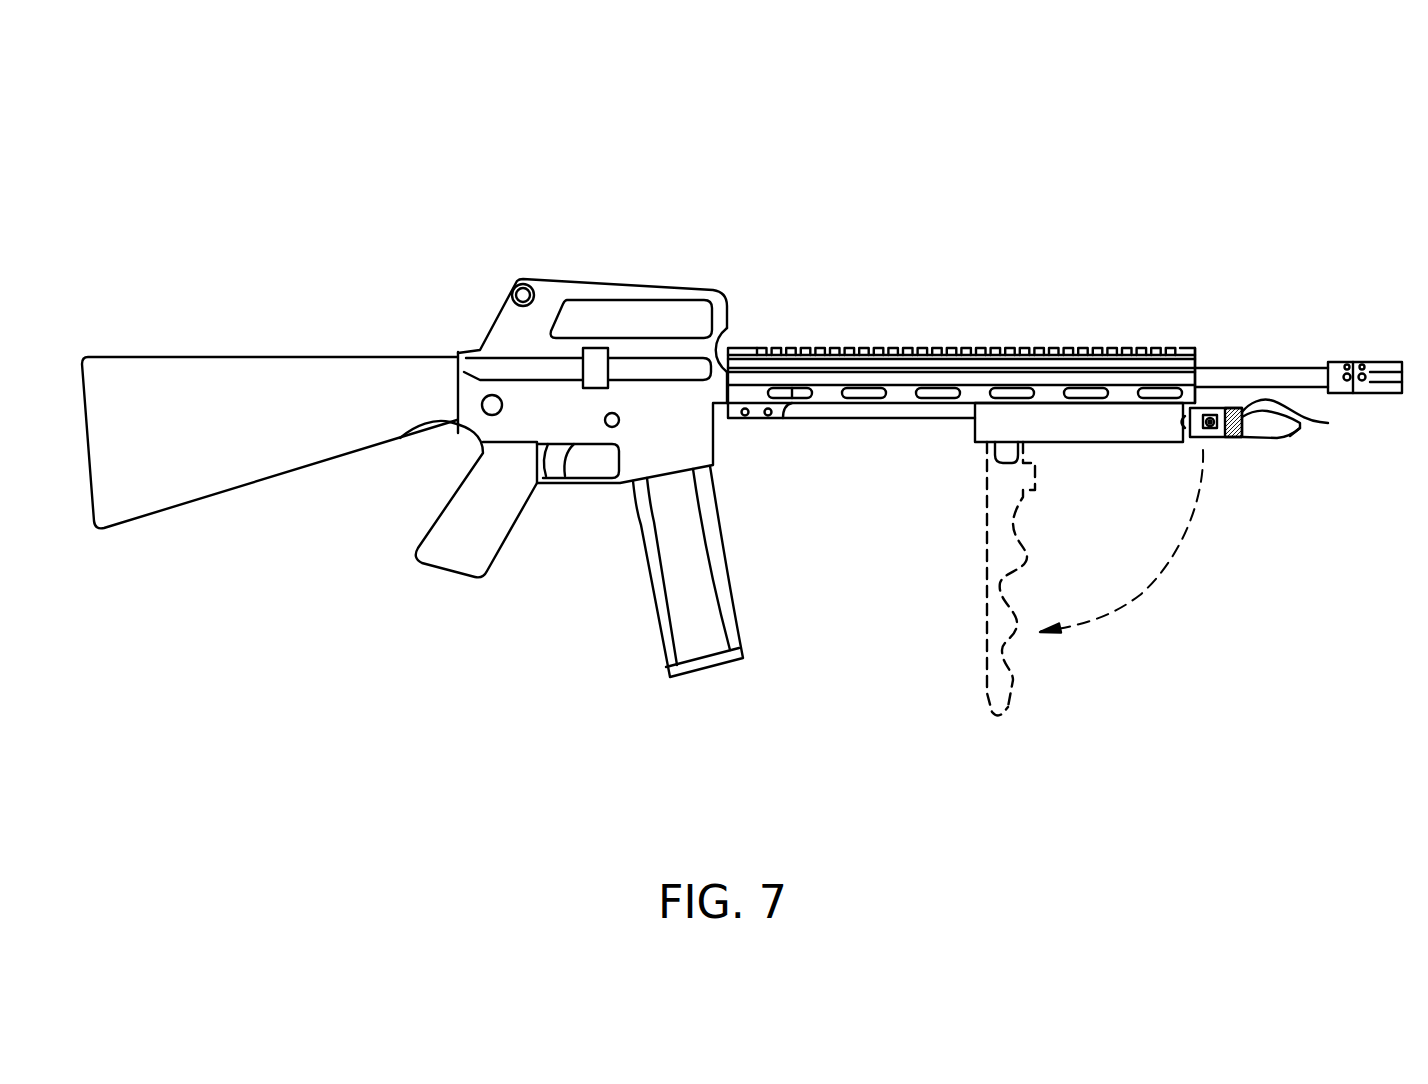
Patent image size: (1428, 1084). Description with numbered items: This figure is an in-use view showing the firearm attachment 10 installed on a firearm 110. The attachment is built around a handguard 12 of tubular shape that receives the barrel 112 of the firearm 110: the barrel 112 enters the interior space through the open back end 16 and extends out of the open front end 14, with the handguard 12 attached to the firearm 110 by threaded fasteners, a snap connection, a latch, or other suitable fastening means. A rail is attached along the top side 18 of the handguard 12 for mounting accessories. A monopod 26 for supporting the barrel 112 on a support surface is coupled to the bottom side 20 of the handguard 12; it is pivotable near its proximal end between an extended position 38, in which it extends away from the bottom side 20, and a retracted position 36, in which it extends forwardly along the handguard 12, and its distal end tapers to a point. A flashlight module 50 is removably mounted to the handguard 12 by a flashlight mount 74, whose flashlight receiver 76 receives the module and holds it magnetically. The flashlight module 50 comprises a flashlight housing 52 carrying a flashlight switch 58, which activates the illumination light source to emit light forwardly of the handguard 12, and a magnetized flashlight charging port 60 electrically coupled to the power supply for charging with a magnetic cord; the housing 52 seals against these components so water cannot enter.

The firearm attachment 10 is at (1106, 168).
The firearm 110 is at (562, 290).
The back end 16 is at (727, 331).
The handguard 12 is at (947, 356).
The top side 18 is at (882, 356).
The front end 14 is at (1197, 375).
The bottom side 20 is at (882, 419).
The flashlight receiver 76 is at (1140, 425).
The flashlight mount 74 is at (1081, 465).
The extended position 38 is at (1075, 690).
The flashlight module 50 is at (1240, 382).
The barrel 112 is at (1297, 370).
The flashlight switch 58 is at (1220, 430).
The flashlight charging port 60 is at (1208, 438).
The flashlight housing 52 is at (1328, 423).
The monopod 26 is at (1270, 437).
The retracted position 36 is at (1305, 478).